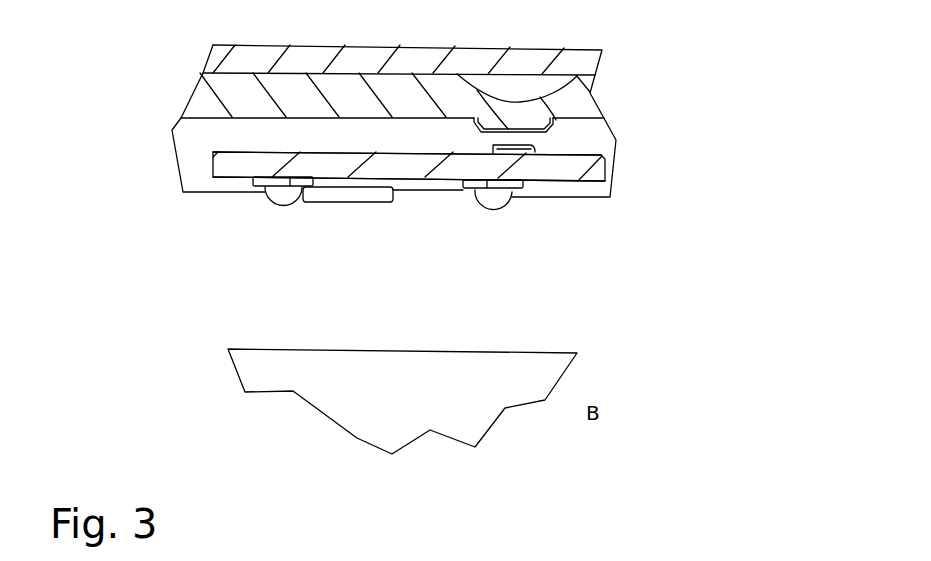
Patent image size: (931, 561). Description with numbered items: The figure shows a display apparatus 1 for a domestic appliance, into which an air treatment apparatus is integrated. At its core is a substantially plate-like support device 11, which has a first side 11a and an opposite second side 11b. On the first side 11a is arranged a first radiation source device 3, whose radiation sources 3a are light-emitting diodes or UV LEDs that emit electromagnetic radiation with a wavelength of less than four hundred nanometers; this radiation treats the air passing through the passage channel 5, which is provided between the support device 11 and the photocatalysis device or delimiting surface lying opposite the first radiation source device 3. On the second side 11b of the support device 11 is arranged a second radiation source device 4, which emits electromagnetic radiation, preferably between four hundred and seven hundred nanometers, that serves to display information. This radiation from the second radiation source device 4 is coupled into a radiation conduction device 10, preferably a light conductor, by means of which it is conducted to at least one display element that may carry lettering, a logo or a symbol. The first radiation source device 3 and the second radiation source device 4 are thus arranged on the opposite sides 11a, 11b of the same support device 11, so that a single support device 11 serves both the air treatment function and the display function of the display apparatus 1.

The display apparatus 1 is at (109, 71).
The radiation conduction device 10 is at (295, 84).
The support device 11 is at (605, 173).
The first side of the support device 11a is at (432, 177).
The second side of the support device 11b is at (403, 156).
The first radiation source device 3 is at (279, 201).
The radiation source 3a is at (492, 201).
The second radiation source device 4 is at (536, 151).
The passage channel 5 is at (227, 325).